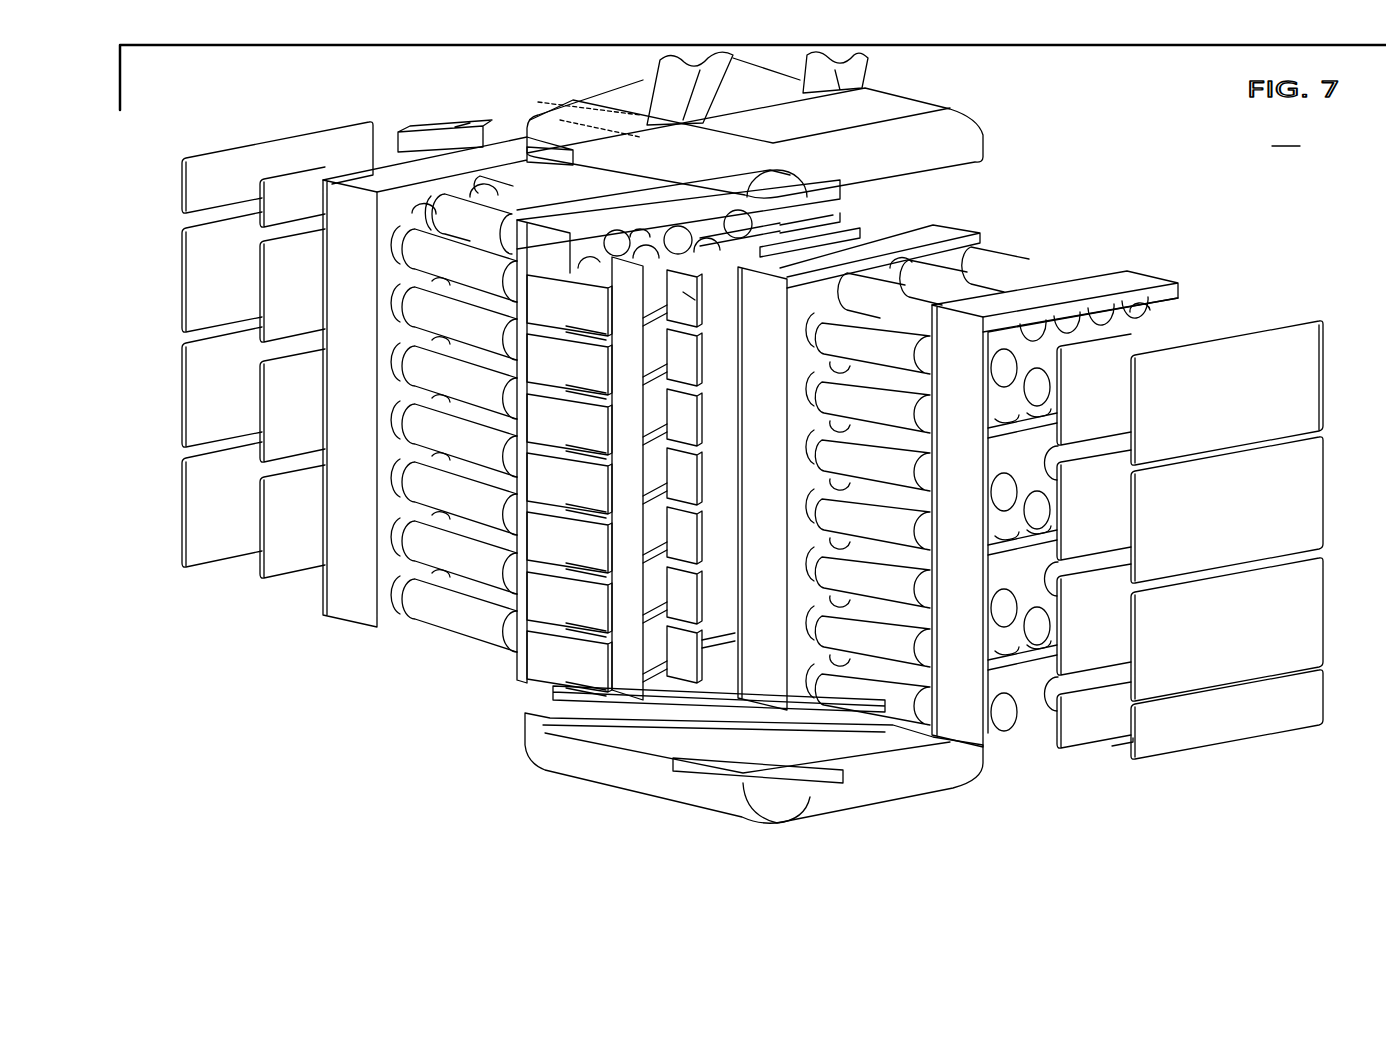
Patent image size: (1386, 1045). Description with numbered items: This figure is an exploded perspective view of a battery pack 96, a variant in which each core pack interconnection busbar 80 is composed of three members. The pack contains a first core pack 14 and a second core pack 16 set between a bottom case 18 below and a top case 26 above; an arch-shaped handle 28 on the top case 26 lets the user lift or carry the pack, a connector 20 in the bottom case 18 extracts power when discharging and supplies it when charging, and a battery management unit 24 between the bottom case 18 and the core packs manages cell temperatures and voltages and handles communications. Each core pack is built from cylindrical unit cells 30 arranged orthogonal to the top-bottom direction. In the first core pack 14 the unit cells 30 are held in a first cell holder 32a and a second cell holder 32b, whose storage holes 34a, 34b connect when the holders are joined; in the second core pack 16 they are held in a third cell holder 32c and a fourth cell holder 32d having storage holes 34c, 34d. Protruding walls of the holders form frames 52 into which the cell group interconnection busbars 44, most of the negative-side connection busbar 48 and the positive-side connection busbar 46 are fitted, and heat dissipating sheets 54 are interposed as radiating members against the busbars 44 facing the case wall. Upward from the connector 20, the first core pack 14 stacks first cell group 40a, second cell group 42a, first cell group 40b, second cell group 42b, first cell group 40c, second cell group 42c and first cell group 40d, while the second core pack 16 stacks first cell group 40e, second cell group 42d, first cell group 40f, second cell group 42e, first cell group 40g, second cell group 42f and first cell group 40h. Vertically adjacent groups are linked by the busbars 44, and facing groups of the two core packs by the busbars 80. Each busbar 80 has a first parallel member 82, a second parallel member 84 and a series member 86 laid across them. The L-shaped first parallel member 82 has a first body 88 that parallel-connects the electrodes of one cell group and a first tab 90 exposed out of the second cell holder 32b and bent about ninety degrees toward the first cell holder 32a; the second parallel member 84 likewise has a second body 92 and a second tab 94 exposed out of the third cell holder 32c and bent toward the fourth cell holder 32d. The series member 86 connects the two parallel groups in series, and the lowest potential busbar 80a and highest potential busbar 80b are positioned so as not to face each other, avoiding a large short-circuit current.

The first core pack 14 is at (242, 620).
The second core pack 16 is at (1125, 218).
The bottom case 18 is at (933, 780).
The connector 20 is at (727, 757).
The battery management unit 24 is at (610, 703).
The top case 26 is at (977, 133).
The handle 28 is at (855, 73).
The unit cell 30 is at (423, 243).
The first cell holder 32a is at (347, 615).
The second cell holder 32b is at (520, 657).
The third cell holder 32c is at (983, 237).
The fourth cell holder 32d is at (1173, 277).
The storage hole 34a is at (494, 187).
The storage hole 34b is at (680, 237).
The storage hole 34c is at (903, 264).
The storage hole 34d is at (1097, 330).
The first cell group 40a is at (391, 593).
The first cell group 40b is at (391, 476).
The first cell group 40c is at (391, 358).
The first cell group 40d is at (391, 241).
The first cell group 40e is at (806, 678).
The first cell group 40f is at (806, 560).
The first cell group 40g is at (806, 442).
The first cell group 40h is at (806, 342).
The second cell group 42a is at (391, 534).
The second cell group 42b is at (391, 417).
The second cell group 42c is at (391, 300).
The second cell group 42d is at (806, 618).
The second cell group 42e is at (806, 502).
The second cell group 42f is at (806, 383).
The cell group interconnection busbar 44 is at (275, 276).
The positive-side connection busbar 46 is at (275, 193).
The negative-side connection busbar 48 is at (1085, 722).
The frame 52 is at (643, 235).
The heat dissipating sheet 54 is at (183, 184).
The core pack interconnection busbar 80 is at (718, 567).
The lowest potential busbar 80a is at (719, 656).
The highest potential busbar 80b is at (832, 214).
The first parallel member 82 is at (625, 300).
The second parallel member 84 is at (673, 293).
The series member 86 is at (515, 312).
The first body 88 is at (737, 218).
The first tab 90 is at (627, 282).
The second body 92 is at (790, 227).
The second tab 94 is at (685, 297).
The battery pack 96 is at (1286, 134).